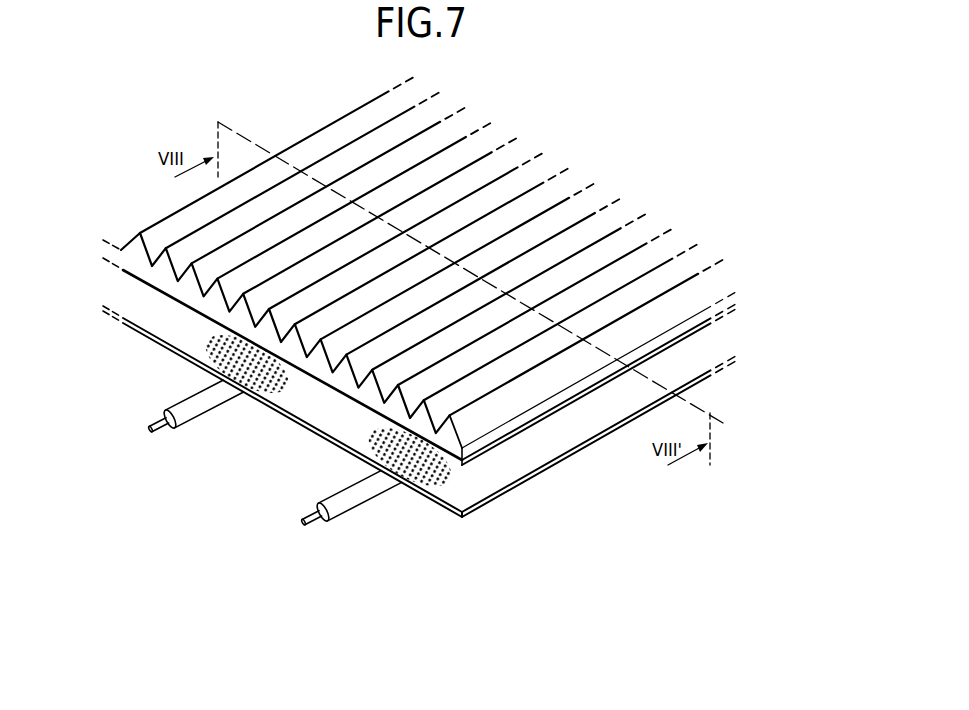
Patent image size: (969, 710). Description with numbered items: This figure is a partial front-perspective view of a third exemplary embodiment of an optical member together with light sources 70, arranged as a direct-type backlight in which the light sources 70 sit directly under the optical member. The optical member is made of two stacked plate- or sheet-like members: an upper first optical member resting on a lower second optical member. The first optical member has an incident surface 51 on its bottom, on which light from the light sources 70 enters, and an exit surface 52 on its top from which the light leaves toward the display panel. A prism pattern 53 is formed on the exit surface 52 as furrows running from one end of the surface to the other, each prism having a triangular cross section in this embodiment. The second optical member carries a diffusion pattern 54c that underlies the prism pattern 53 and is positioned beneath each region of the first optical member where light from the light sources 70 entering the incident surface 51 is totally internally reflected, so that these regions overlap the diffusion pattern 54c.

The light sources 70 is at (178, 412).
The incident surface 51 is at (462, 463).
The exit surface 52 is at (447, 431).
The prism pattern 53 is at (459, 442).
The diffusion pattern 54c is at (417, 478).